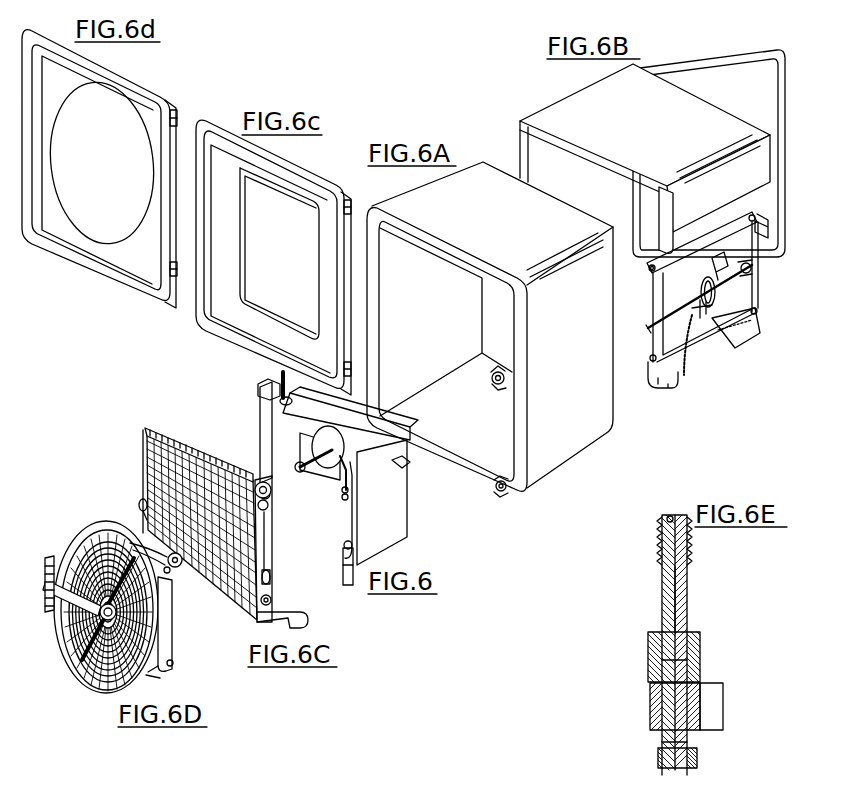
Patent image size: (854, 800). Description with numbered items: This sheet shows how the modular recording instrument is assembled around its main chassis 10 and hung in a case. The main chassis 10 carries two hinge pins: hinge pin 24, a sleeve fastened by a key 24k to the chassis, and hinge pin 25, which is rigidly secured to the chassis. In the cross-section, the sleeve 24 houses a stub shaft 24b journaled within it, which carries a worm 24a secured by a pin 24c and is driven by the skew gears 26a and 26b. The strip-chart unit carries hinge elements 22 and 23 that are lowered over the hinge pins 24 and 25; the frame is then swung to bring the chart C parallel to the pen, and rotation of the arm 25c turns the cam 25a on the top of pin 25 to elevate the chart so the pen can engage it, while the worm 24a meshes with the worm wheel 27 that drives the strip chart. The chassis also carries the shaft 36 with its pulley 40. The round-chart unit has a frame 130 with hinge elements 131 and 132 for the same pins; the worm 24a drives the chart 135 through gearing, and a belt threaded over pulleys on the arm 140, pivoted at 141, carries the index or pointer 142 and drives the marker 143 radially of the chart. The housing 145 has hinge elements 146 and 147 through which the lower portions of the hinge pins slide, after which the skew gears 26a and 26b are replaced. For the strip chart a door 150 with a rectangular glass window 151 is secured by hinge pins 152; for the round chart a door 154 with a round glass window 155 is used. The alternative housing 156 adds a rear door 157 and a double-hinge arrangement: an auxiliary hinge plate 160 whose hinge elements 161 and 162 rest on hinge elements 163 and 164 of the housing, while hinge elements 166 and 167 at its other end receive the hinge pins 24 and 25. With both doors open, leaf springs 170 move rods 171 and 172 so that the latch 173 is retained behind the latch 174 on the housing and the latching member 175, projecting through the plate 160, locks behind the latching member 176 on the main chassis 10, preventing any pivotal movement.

In FIG. 6d, the door 154 is at (152, 86).
In FIG. 6d, the hinge pins 152 is at (178, 113).
In FIG. 6c, the hinge pins 152 is at (347, 203).
In FIG. 6d, the round glass window 155 is at (98, 215).
In FIG. 6c, the door 150 is at (320, 176).
In FIG. 6c, the rectangular glass window 151 is at (265, 300).
In FIG. 6A, the housing 145 is at (585, 435).
In FIG. 6A, the hinge element 146 is at (496, 386).
In FIG. 6E, the hinge element 146 is at (650, 707).
In FIG. 6A, the hinge element 147 is at (501, 492).
In FIG. 6B, the rear door 157 is at (718, 57).
In FIG. 6B, the housing 156 is at (570, 100).
In FIG. 6B, the auxiliary hinge plate 160 is at (676, 356).
In FIG. 6B, the hinge element 161 is at (750, 216).
In FIG. 6B, the hinge element 163 is at (764, 225).
In FIG. 6B, the hinge element 166 is at (650, 274).
In FIG. 6B, the hinge element 167 is at (652, 366).
In FIG. 6B, the rod 171 is at (650, 330).
In FIG. 6B, the leaf springs 170 is at (704, 284).
In FIG. 6B, the latching member 175 is at (716, 256).
In FIG. 6B, the rod 172 is at (744, 264).
In FIG. 6B, the latch 173 is at (710, 310).
In FIG. 6B, the latch 174 is at (690, 320).
In FIG. 6B, the hinge element 164 is at (760, 335).
In FIG. 6B, the hinge element 162 is at (751, 316).
In FIG. 6, the main chassis 10 is at (405, 506).
In FIG. 6E, the main chassis 10 is at (648, 645).
In FIG. 6, the latching member 176 is at (410, 470).
In FIG. 6, the pulley 40 is at (320, 447).
In FIG. 6, the shaft 36 is at (315, 472).
In FIG. 6, the hinge pin 24 is at (340, 458).
In FIG. 6E, the hinge pin 24 is at (662, 620).
In FIG. 6, the skew gear 26a is at (346, 500).
In FIG. 6E, the skew gear 26a is at (660, 758).
In FIG. 6, the hinge element 22 is at (270, 500).
In FIG. 6, the hinge pin 25 is at (345, 553).
In FIG. 6, the cam 25a is at (288, 583).
In FIG. 6, the hinge element 23 is at (285, 611).
In FIG. 6C, the chart C is at (161, 430).
In FIG. 6C, the worm wheel 27 is at (261, 480).
In FIG. 6C, the arm 25c is at (139, 503).
In FIG. 6D, the frame 130 is at (93, 523).
In FIG. 6D, the marker 143 is at (67, 612).
In FIG. 6D, the index or pointer 142 is at (82, 662).
In FIG. 6D, the arm 140 is at (53, 607).
In FIG. 6D, the pivot 141 is at (48, 558).
In FIG. 6D, the chart 135 is at (108, 680).
In FIG. 6D, the hinge element 131 is at (170, 585).
In FIG. 6D, the hinge element 132 is at (178, 667).
In FIG. 6E, the worm 24a is at (658, 545).
In FIG. 6E, the pin 24c is at (666, 519).
In FIG. 6E, the stub shaft 24b is at (672, 590).
In FIG. 6E, the key 24k is at (666, 660).
In FIG. 6E, the skew gear 26b is at (662, 742).